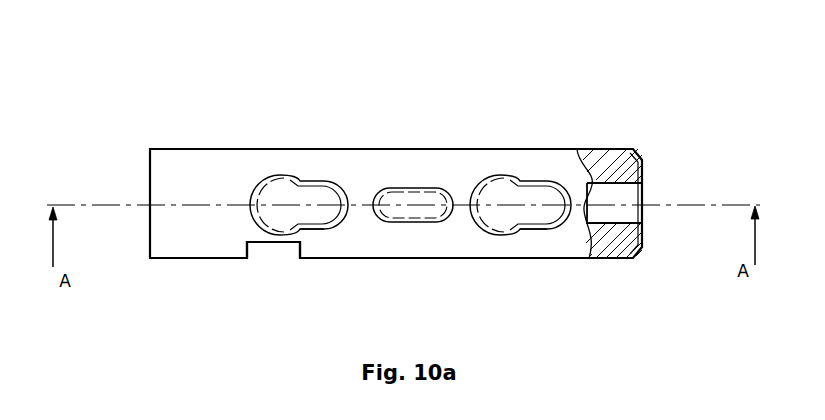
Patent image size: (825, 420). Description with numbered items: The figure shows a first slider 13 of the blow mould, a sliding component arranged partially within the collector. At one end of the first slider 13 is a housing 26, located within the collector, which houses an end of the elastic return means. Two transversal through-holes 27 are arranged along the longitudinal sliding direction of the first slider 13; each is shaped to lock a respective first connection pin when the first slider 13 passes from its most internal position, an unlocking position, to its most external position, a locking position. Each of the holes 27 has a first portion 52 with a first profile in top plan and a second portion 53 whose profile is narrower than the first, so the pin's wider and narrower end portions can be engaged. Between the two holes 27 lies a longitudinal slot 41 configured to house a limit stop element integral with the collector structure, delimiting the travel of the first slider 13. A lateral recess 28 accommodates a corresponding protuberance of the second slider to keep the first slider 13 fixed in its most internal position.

The first slider 13 is at (522, 128).
The housing 26 is at (623, 195).
The transversal through-holes 27 is at (310, 238).
The lateral recess 28 is at (274, 252).
The longitudinal slot 41 is at (423, 197).
The first portion 52 is at (272, 195).
The second portion 53 is at (330, 198).